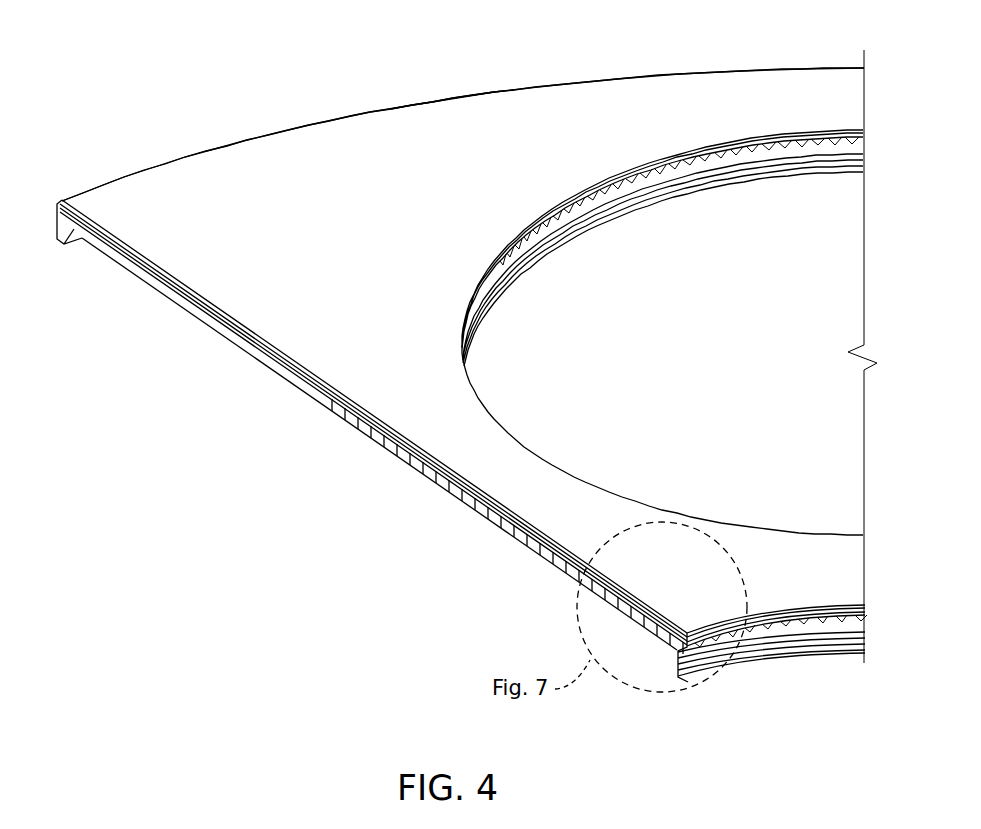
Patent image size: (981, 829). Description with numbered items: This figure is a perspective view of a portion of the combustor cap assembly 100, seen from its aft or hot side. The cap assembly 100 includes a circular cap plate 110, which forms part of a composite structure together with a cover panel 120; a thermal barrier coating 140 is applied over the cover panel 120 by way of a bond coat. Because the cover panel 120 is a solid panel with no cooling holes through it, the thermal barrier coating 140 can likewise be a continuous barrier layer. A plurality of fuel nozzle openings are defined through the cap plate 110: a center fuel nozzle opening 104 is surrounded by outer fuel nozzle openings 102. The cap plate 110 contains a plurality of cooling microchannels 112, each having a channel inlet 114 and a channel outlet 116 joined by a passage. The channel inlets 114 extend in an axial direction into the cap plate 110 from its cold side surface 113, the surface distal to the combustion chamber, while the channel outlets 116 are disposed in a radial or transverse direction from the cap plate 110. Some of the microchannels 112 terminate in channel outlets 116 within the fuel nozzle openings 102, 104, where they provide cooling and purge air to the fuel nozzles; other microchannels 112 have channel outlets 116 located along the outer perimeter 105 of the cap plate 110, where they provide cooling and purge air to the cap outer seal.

The combustor cap assembly 100 is at (128, 84).
The outer fuel nozzle opening 102 is at (733, 200).
The center fuel nozzle opening 104 is at (825, 663).
The outer perimeter 105 is at (362, 98).
The circular cap plate 110 is at (172, 324).
The cooling microchannel 112 is at (654, 638).
The cold side surface 113 is at (283, 376).
The channel inlet 114 is at (513, 524).
The channel outlet 116 is at (640, 186).
The cover panel 120 is at (62, 200).
The thermal barrier coating 140 is at (454, 140).